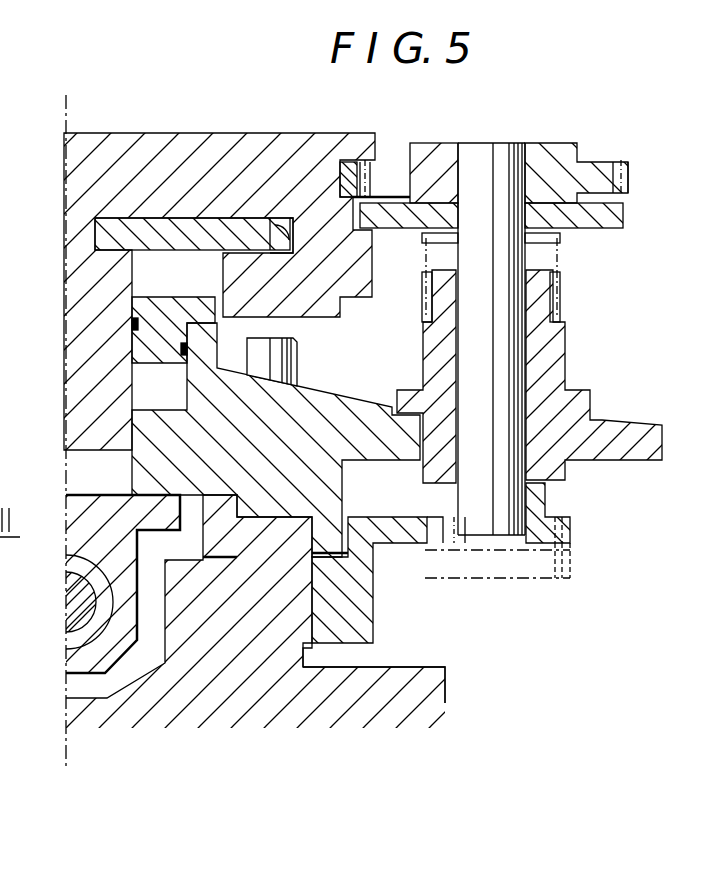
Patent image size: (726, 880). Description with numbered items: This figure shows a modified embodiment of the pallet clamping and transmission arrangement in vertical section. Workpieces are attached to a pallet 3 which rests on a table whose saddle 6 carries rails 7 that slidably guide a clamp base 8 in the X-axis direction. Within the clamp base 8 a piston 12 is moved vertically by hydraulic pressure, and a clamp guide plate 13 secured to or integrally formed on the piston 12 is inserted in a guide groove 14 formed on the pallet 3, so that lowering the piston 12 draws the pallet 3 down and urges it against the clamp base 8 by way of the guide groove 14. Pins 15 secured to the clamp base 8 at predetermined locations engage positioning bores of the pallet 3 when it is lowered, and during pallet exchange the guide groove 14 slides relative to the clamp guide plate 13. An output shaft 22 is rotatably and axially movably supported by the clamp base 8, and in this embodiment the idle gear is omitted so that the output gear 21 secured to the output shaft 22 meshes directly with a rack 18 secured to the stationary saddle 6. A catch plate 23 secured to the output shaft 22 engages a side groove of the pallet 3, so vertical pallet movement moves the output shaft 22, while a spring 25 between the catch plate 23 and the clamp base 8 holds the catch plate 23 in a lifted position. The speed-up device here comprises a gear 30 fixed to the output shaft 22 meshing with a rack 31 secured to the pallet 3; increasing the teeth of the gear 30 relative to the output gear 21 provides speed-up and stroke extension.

The pallet 3 is at (164, 146).
The saddle 6 is at (432, 678).
The rails 7 is at (283, 554).
The clamp base 8 is at (371, 405).
The piston 12 is at (160, 345).
The clamp guide plate 13 is at (221, 228).
The guide groove 14 is at (277, 236).
The pins 15 is at (298, 362).
The rack 18 is at (407, 535).
The output gear 21 is at (540, 548).
The output shaft 22 is at (517, 363).
The catch plate 23 is at (598, 214).
The spring 25 is at (557, 313).
The gear 30 is at (548, 157).
The rack 31 is at (350, 165).